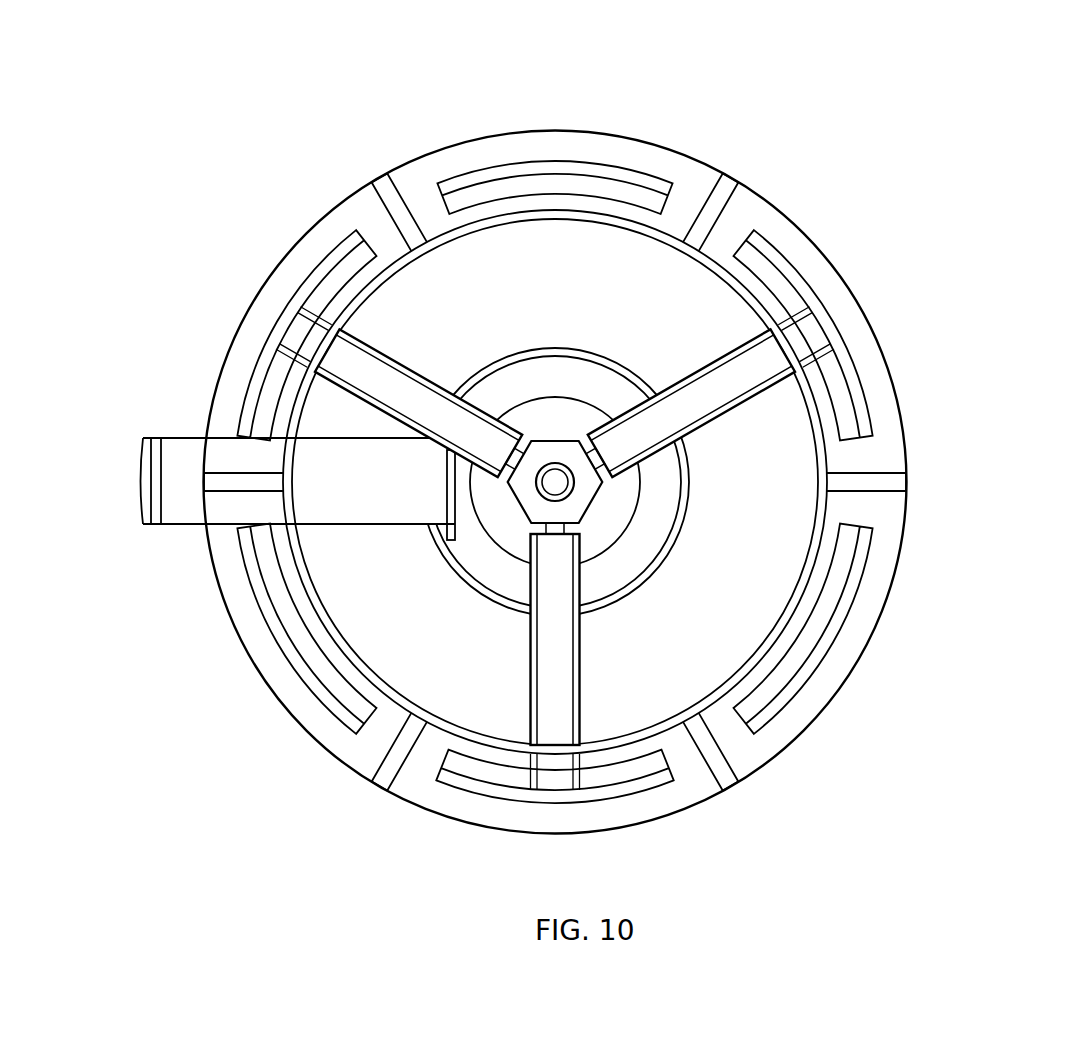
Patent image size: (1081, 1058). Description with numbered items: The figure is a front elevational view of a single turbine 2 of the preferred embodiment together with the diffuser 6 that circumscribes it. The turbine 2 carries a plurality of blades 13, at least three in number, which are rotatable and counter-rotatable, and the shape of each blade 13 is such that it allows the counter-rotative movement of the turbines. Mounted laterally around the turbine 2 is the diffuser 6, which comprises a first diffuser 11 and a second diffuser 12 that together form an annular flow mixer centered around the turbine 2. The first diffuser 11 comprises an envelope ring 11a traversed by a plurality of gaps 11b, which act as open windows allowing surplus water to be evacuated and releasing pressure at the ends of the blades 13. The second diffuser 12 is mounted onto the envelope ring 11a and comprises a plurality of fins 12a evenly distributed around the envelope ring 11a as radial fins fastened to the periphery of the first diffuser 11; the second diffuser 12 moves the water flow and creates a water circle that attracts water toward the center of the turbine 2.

The turbine 2 is at (598, 615).
The diffuser 6 is at (586, 447).
The first diffuser 11 is at (510, 447).
The envelope ring 11a is at (227, 387).
The gap 11b is at (622, 192).
The second diffuser 12 is at (555, 427).
The fin 12a is at (382, 182).
The blade 13 is at (555, 548).